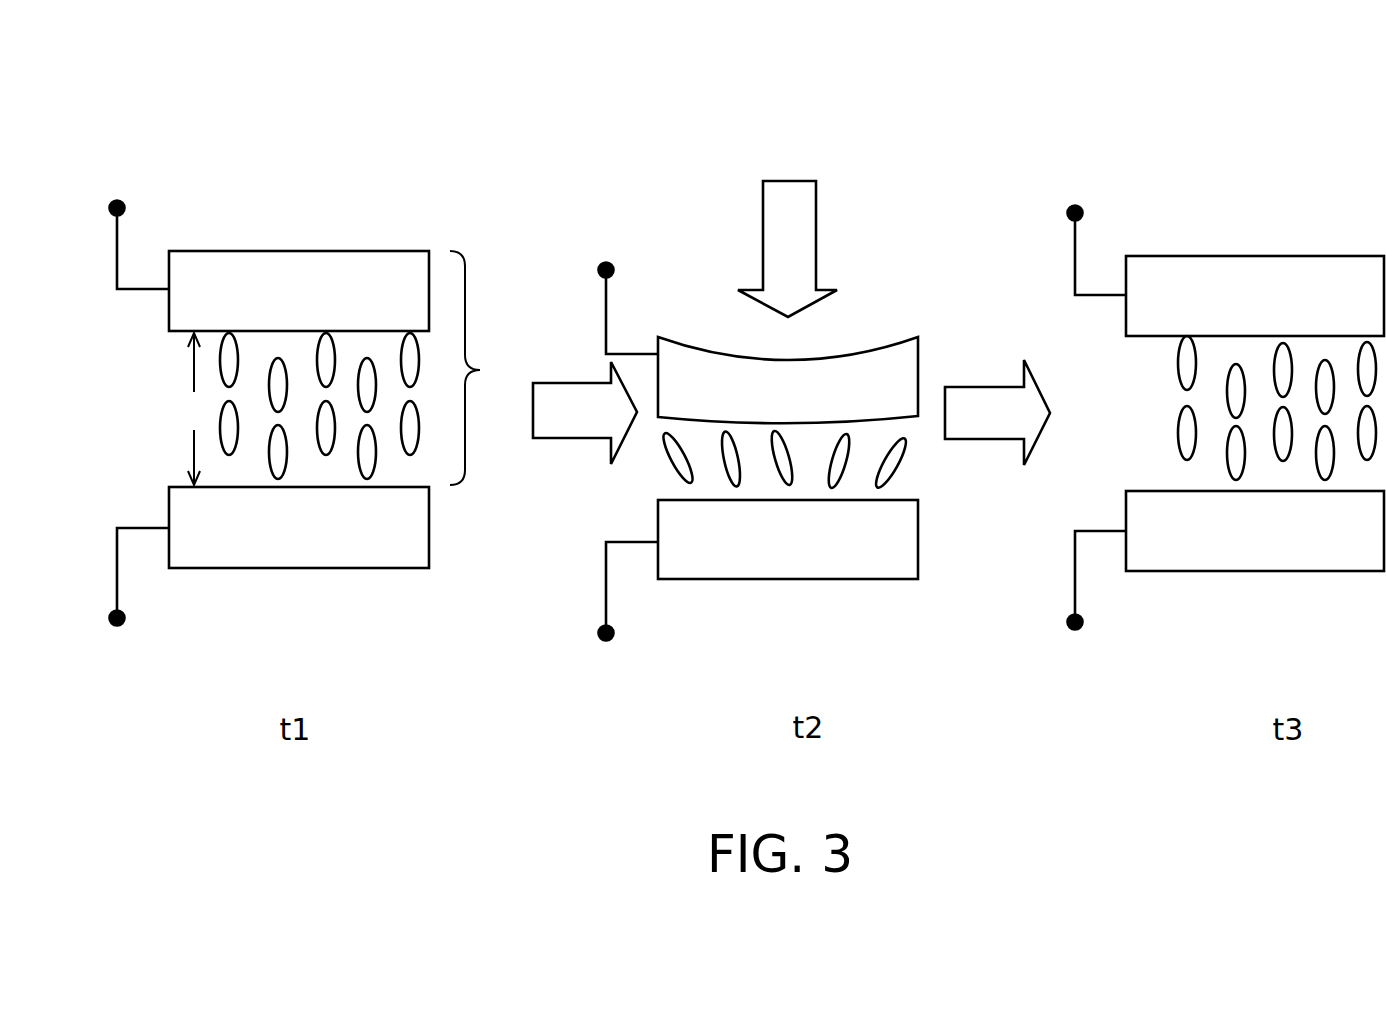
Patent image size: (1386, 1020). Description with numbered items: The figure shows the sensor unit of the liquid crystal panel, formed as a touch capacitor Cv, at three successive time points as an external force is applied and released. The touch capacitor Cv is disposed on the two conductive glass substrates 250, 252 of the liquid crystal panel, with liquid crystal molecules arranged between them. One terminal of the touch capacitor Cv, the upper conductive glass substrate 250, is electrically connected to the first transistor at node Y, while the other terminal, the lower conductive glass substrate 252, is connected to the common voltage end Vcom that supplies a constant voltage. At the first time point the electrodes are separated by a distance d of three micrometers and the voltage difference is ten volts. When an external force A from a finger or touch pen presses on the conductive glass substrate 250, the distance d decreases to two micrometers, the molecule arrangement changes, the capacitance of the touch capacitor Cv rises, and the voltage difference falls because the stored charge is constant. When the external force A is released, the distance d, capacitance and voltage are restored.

The conductive glass substrate 250 is at (344, 273).
The conductive glass substrate 252 is at (376, 547).
The node Y is at (617, 256).
The common voltage end Vcom is at (601, 601).
The touch capacitor Cv is at (490, 368).
The distance d is at (195, 409).
The external force A is at (773, 249).